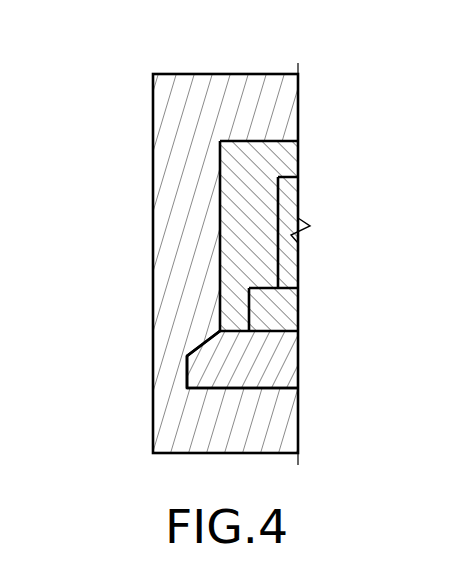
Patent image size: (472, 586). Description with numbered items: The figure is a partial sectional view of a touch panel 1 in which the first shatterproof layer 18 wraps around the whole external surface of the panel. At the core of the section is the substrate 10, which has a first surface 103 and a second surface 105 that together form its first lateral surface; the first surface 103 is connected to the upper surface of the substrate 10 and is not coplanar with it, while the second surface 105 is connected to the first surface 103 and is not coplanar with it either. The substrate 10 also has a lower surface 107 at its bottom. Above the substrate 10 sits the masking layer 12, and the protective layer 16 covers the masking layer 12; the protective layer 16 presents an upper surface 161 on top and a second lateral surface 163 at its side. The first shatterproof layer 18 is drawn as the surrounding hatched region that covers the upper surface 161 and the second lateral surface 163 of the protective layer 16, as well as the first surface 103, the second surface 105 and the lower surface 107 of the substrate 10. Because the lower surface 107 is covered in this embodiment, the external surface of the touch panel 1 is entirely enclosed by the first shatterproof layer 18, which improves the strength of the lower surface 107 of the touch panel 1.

The touch panel 1 is at (44, 45).
The substrate 10 is at (238, 374).
The first surface 103 is at (207, 345).
The second surface 105 is at (185, 367).
The lower surface 107 is at (268, 388).
The masking layer 12 is at (247, 302).
The protective layer 16 is at (242, 258).
The upper surface 161 is at (260, 149).
The second lateral surface 163 is at (222, 217).
The first shatterproof layer 18 is at (176, 133).